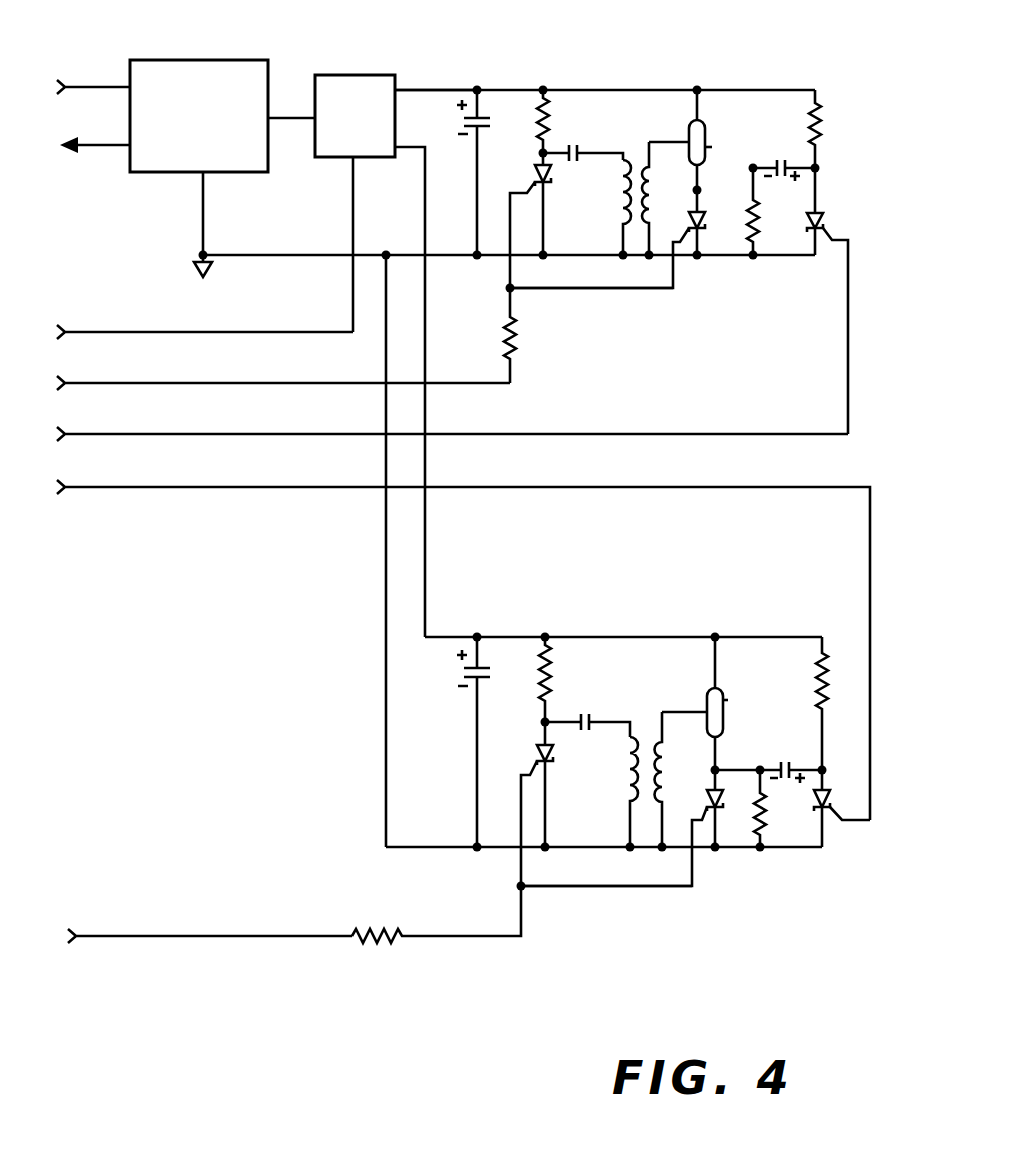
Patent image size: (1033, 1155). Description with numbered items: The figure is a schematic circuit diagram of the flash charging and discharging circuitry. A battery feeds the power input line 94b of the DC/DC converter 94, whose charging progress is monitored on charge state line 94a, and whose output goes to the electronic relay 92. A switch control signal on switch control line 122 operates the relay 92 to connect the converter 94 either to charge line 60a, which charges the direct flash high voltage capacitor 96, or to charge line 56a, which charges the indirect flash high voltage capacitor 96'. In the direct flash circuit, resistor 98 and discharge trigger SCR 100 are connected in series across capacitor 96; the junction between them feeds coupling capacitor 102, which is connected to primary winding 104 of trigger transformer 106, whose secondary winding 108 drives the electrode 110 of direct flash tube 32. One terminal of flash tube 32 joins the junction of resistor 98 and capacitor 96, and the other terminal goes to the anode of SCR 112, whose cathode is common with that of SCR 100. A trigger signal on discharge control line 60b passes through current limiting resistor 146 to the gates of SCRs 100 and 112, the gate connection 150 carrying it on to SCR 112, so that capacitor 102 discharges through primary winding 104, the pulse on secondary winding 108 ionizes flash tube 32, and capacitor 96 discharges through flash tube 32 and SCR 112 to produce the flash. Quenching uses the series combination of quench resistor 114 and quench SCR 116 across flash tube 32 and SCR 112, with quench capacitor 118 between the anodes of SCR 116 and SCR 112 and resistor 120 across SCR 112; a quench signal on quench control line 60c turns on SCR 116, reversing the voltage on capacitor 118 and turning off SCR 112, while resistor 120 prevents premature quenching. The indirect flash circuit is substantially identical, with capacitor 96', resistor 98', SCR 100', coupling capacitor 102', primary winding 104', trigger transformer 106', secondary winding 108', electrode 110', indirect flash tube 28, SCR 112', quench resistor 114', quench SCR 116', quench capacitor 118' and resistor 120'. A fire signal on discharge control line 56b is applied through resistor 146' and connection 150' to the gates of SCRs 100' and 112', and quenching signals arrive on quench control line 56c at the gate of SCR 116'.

The DC/DC converter 94 is at (234, 60).
The charge state line 94a is at (106, 145).
The power input line 94b is at (110, 87).
The switching relay 92 is at (350, 75).
The direct flash high voltage capacitor charge line 60a is at (444, 90).
The discharge control line 60b is at (324, 383).
The quench control line 60c is at (324, 434).
The indirect flash high voltage capacitor charge line 56a is at (428, 552).
The discharge control line 56b is at (270, 936).
The quench control line 56c is at (320, 487).
The switch control line 122 is at (312, 332).
The direct flash high voltage capacitor 96 is at (460, 172).
The resistor 98 is at (563, 101).
The discharge trigger SCR 100 is at (517, 212).
The coupling capacitor 102 is at (583, 128).
The primary winding 104 is at (596, 207).
The trigger transformer 106 is at (655, 179).
The secondary winding 108 is at (604, 234).
The electrode 110 is at (672, 119).
The direct flash tube 32 is at (712, 147).
The SCR 112 is at (629, 239).
The quench resistor 114 is at (842, 114).
The quench SCR 116 is at (841, 301).
The quench capacitor 118 is at (782, 145).
The resistor 120 is at (780, 227).
The current limiting resistor 146 is at (539, 335).
The gate connection line 150 is at (591, 310).
The indirect flash high voltage capacitor 96' is at (488, 724).
The resistor 98' is at (569, 661).
The indirect flash discharge trigger SCR 100' is at (517, 801).
The coupling capacitor 102' is at (587, 705).
The primary winding 104' is at (600, 792).
The trigger transformer 106' is at (670, 760).
The secondary winding 108' is at (608, 822).
The electrode 110' is at (686, 703).
The indirect flash tube 28 is at (723, 707).
The SCR 112' is at (641, 828).
The quench resistor 114' is at (792, 684).
The quench SCR 116' is at (850, 816).
The quench capacitor 118' is at (768, 749).
The resistor 120' is at (788, 826).
The resistor 146' is at (436, 914).
The gate connection line 150' is at (606, 904).